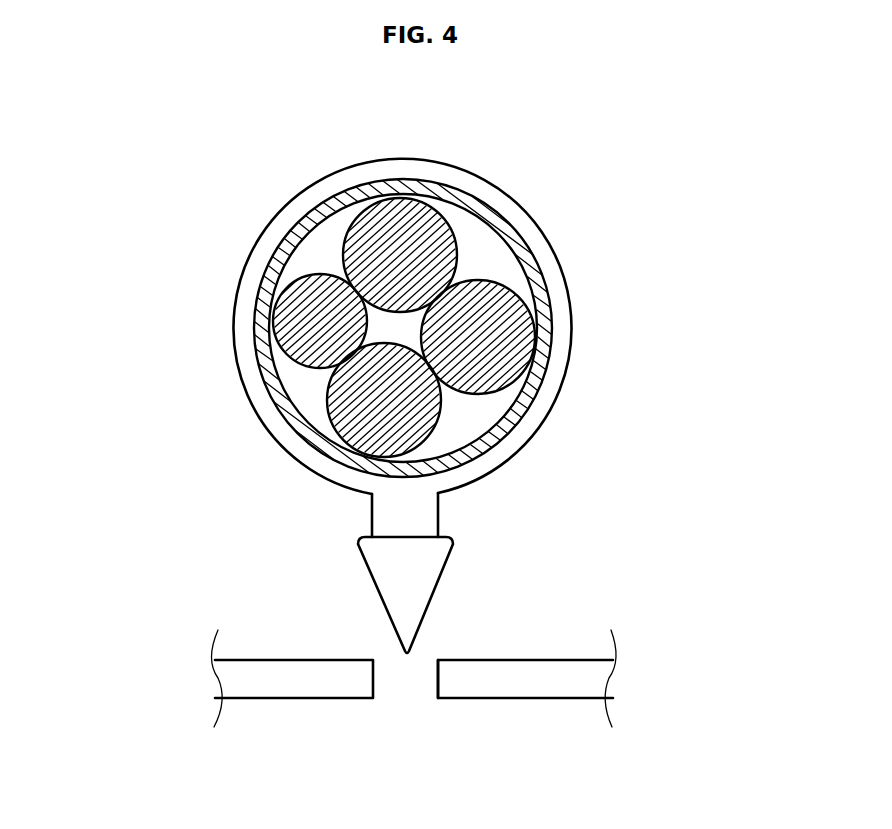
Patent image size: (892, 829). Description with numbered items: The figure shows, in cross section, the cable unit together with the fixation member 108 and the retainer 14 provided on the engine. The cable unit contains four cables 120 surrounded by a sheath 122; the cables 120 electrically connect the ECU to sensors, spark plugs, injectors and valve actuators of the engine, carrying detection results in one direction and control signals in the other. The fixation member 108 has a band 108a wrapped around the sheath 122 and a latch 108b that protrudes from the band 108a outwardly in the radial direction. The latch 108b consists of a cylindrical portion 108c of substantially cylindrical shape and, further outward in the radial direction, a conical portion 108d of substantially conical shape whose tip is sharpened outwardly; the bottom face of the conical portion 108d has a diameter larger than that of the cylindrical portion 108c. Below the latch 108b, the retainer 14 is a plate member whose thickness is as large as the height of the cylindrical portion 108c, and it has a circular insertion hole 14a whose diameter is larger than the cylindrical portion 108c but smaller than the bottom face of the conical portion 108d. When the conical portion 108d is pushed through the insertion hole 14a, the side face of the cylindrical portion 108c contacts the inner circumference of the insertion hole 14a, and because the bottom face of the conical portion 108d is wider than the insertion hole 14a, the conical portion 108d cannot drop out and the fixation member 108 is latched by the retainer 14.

The fixation member 108 is at (218, 107).
The band 108a is at (508, 460).
The latch 108b is at (584, 573).
The cylindrical portion 108c is at (438, 524).
The conical portion 108d is at (442, 566).
The cables 120 is at (381, 382).
The sheath 122 is at (532, 270).
The retainer 14 is at (280, 690).
The insertion hole 14a is at (438, 697).